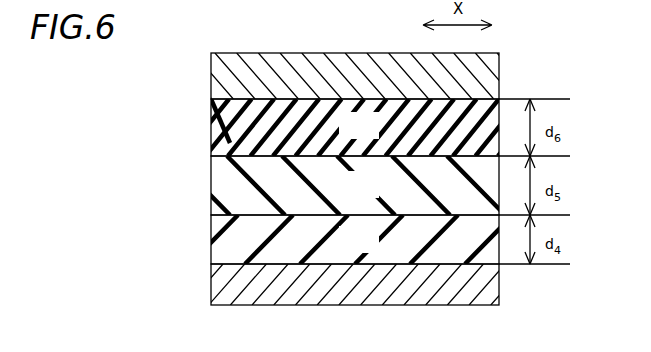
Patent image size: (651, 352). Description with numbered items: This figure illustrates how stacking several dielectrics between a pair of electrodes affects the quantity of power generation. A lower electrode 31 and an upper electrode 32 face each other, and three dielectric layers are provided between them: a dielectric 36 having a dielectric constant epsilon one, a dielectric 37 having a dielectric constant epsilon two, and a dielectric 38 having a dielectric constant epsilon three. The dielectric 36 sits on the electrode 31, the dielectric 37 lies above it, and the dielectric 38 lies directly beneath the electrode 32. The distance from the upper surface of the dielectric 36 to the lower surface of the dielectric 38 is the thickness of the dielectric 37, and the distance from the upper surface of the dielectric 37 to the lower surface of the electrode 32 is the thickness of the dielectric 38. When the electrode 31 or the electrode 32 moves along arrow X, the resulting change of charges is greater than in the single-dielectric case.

The electrode 31 is at (240, 279).
The electrode 32 is at (240, 70).
The dielectric 36 is at (238, 238).
The dielectric 37 is at (238, 181).
The dielectric 38 is at (240, 124).